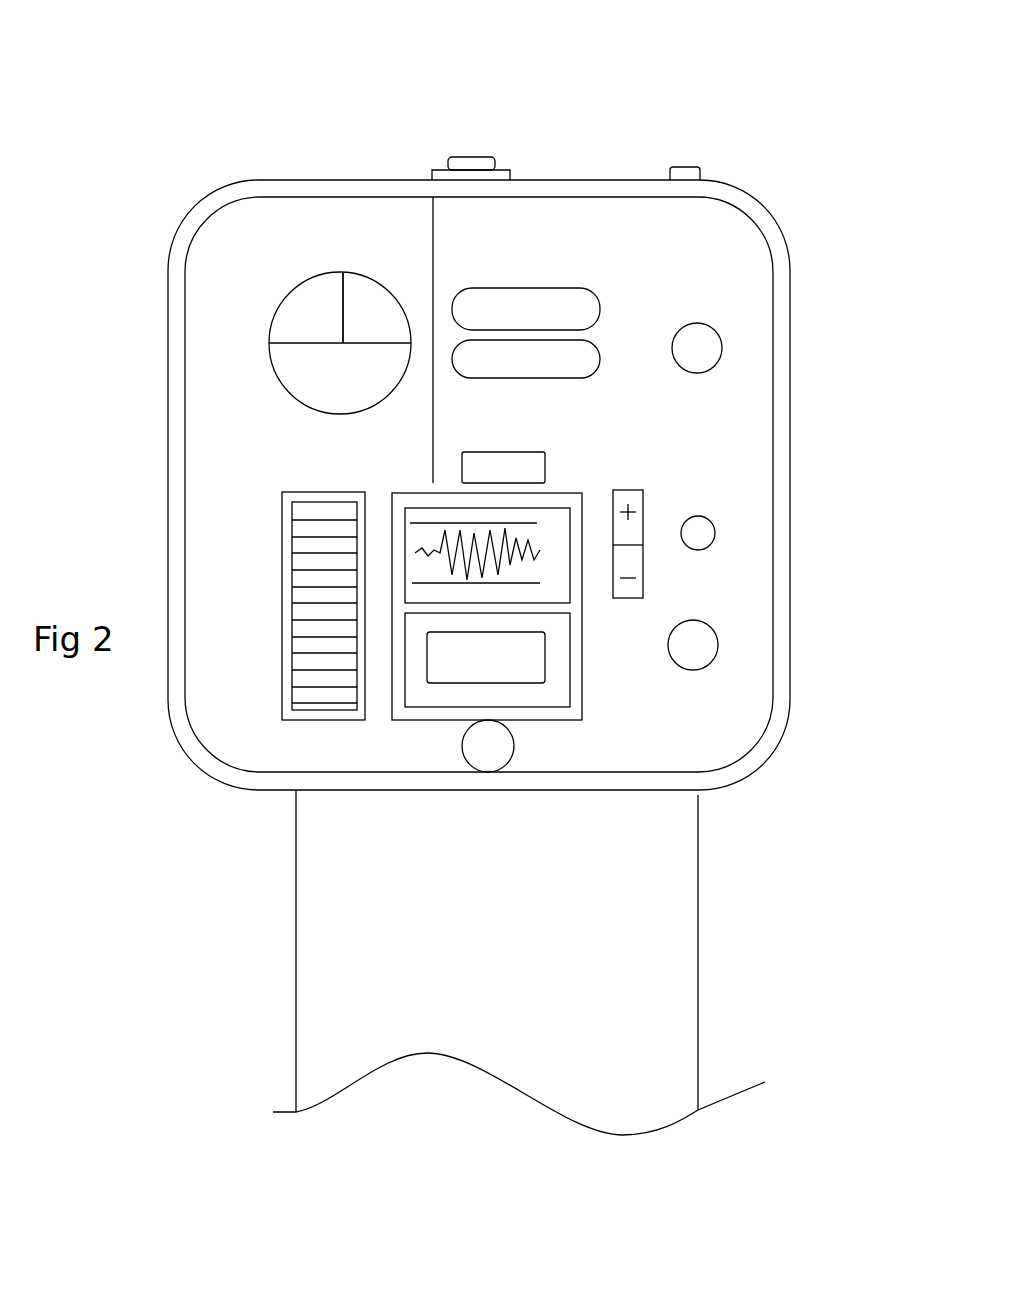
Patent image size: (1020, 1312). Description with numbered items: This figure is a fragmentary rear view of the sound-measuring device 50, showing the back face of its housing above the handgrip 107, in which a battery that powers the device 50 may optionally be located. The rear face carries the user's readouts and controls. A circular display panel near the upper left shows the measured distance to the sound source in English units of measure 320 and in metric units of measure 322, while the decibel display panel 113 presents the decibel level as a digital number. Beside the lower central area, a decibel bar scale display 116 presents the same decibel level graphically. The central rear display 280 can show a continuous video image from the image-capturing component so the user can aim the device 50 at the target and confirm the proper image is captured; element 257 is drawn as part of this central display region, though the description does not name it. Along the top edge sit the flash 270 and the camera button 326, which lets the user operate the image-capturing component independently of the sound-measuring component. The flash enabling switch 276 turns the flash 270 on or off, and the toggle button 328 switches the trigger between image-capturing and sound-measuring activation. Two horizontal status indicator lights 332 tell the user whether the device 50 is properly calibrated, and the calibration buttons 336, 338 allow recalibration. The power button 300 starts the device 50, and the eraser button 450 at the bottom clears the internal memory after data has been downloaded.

The device 50 is at (250, 153).
The handgrip 107 is at (698, 948).
The decibel display panel 113 is at (278, 377).
The decibel bar scale display 116 is at (323, 677).
The display screen 257 is at (578, 492).
The flash 270 is at (466, 155).
The flash enabling switch 276 is at (723, 348).
The display 280 is at (545, 650).
The power button 300 is at (699, 700).
The English units of measure 320 is at (303, 297).
The metric units of measure 322 is at (356, 283).
The camera button 326 is at (695, 162).
The toggle button 328 is at (545, 462).
The status indicator lights 332 is at (607, 333).
The calibration button 336 is at (648, 567).
The calibration button 338 is at (717, 530).
The eraser button 450 is at (490, 772).